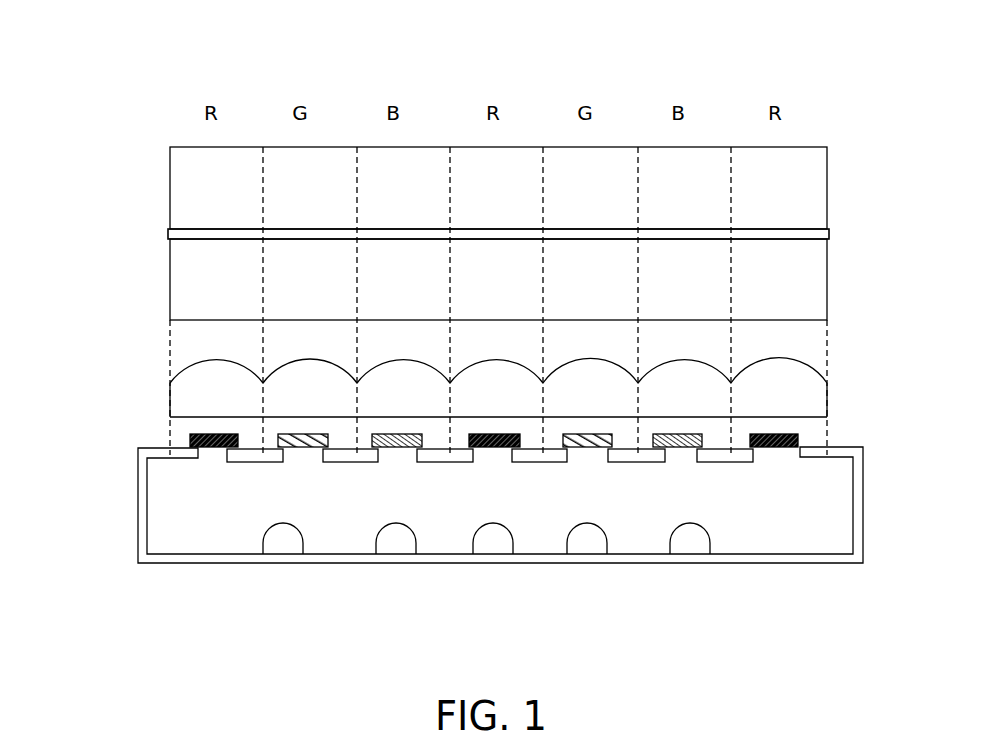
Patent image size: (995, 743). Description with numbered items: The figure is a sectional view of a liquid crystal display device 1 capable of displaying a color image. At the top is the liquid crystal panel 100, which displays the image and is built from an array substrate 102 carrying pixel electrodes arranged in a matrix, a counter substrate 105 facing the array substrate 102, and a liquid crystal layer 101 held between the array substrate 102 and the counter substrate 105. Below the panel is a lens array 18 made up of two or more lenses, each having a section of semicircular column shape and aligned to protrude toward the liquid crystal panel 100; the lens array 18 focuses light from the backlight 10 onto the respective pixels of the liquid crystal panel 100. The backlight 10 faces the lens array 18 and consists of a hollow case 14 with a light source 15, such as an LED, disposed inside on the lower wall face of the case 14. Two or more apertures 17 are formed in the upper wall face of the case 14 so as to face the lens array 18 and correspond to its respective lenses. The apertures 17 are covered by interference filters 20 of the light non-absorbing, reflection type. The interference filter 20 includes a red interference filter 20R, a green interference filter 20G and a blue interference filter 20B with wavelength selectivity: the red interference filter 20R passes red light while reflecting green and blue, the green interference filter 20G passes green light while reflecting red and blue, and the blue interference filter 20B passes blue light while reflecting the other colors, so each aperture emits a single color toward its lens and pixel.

The liquid crystal display device 1 is at (804, 68).
The liquid crystal panel 100 is at (105, 170).
The counter substrate 105 is at (193, 193).
The liquid crystal layer 101 is at (170, 233).
The array substrate 102 is at (193, 274).
The lens array 18 is at (190, 400).
The backlight 10 is at (104, 510).
The case 14 is at (675, 562).
The light source 15 is at (590, 545).
The apertures 17 is at (775, 455).
The interference filter 20 is at (362, 632).
The red interference filter 20R is at (212, 447).
The green interference filter 20G is at (295, 447).
The blue interference filter 20B is at (393, 447).